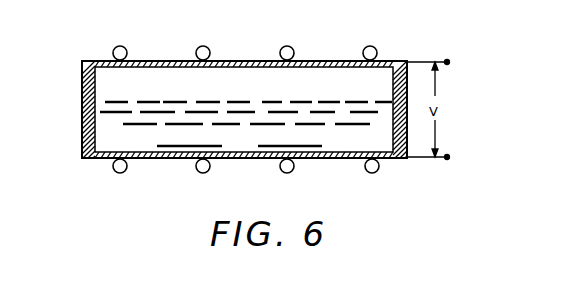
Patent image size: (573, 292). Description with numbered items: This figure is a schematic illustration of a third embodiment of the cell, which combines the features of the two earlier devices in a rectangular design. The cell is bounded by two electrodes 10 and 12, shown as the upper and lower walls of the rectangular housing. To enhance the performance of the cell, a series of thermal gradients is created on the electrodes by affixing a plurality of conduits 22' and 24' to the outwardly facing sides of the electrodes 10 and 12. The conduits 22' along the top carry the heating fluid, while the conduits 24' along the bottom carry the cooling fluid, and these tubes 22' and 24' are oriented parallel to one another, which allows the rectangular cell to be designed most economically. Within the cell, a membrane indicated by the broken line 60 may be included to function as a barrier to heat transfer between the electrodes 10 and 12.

The electrode 10 is at (339, 61).
The electrode 12 is at (258, 158).
The conduits 22' is at (245, 36).
The conduits 24' is at (255, 184).
The membrane 60 is at (110, 102).